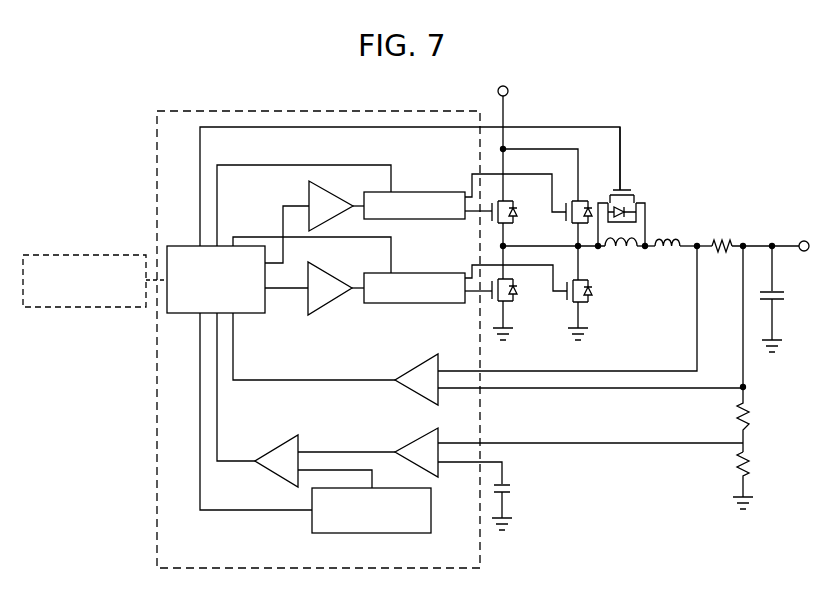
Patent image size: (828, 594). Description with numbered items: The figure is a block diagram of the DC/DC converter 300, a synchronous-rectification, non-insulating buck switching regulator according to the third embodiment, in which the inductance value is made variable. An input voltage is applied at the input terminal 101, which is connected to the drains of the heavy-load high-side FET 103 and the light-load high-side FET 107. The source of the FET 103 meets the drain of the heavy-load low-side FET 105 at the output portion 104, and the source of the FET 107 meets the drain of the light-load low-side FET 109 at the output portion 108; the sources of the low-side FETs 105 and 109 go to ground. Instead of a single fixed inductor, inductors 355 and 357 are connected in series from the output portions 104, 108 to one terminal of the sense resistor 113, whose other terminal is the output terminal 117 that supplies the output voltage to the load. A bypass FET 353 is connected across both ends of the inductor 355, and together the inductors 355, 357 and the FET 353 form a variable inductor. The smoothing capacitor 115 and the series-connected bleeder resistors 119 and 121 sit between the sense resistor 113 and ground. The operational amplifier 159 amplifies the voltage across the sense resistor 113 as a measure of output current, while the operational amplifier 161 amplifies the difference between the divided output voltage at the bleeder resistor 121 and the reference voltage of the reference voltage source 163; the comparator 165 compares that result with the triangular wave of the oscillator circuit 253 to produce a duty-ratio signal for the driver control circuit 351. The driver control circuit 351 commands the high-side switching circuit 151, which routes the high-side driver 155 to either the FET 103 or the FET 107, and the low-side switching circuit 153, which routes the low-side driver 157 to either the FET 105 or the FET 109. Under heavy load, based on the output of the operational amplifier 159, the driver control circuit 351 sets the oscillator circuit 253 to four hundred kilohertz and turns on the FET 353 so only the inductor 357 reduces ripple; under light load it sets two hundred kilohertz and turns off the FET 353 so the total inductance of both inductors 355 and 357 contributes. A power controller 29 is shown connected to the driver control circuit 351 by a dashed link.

The DC/DC converter 300 is at (100, 105).
The power controller 29 is at (101, 255).
The driver control circuit 351 is at (177, 313).
The high-side driver 155 is at (305, 191).
The low-side driver 157 is at (330, 284).
The high-side switching circuit 151 is at (416, 192).
The low-side switching circuit 153 is at (452, 303).
The input terminal 101 is at (508, 93).
The heavy-load high-side FET 103 is at (518, 216).
The heavy-load low-side FET 105 is at (517, 297).
The light-load high-side FET 107 is at (576, 196).
The light-load low-side FET 109 is at (592, 298).
The output portion 104 is at (500, 246).
The output portion 108 is at (580, 252).
The bypass FET 353 is at (628, 192).
The inductor 355 is at (626, 250).
The inductor 357 is at (674, 244).
The sense resistor 113 is at (724, 242).
The smoothing capacitor 115 is at (792, 282).
The output terminal 117 is at (800, 241).
The bleeder resistor 119 is at (752, 407).
The bleeder resistor 121 is at (752, 462).
The operational amplifier 159 is at (426, 366).
The operational amplifier 161 is at (412, 442).
The comparator 165 is at (295, 438).
The reference voltage source 163 is at (512, 486).
The oscillator circuit 253 is at (312, 519).